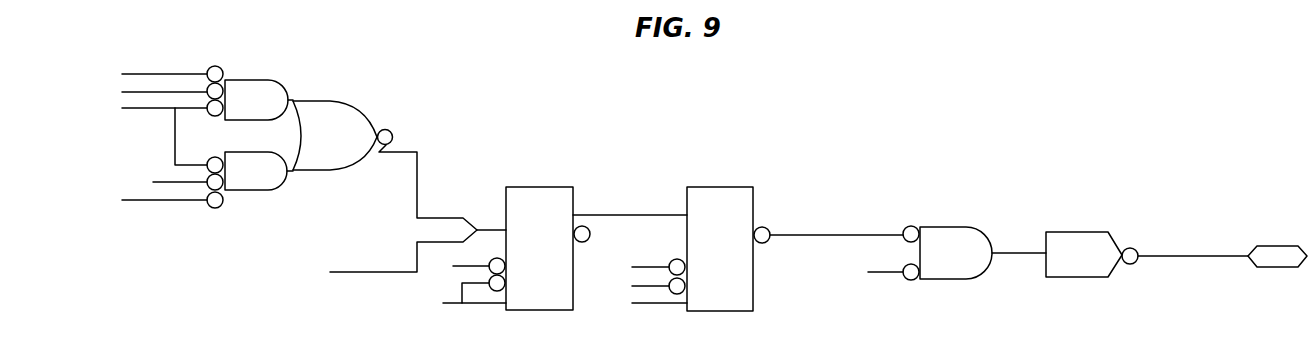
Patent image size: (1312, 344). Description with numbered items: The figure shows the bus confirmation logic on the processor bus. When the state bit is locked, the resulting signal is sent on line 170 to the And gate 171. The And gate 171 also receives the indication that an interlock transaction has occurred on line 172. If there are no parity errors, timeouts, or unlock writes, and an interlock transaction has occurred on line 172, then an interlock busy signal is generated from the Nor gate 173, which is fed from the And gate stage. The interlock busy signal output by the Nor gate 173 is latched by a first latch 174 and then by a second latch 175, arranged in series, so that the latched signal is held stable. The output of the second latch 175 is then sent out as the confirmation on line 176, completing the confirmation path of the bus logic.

The line 170 is at (133, 67).
The And gate 171 is at (237, 87).
The line 172 is at (165, 90).
The Nor gate 173 is at (332, 117).
The latch 174 is at (539, 197).
The latch 175 is at (732, 197).
The line 176 is at (1203, 255).